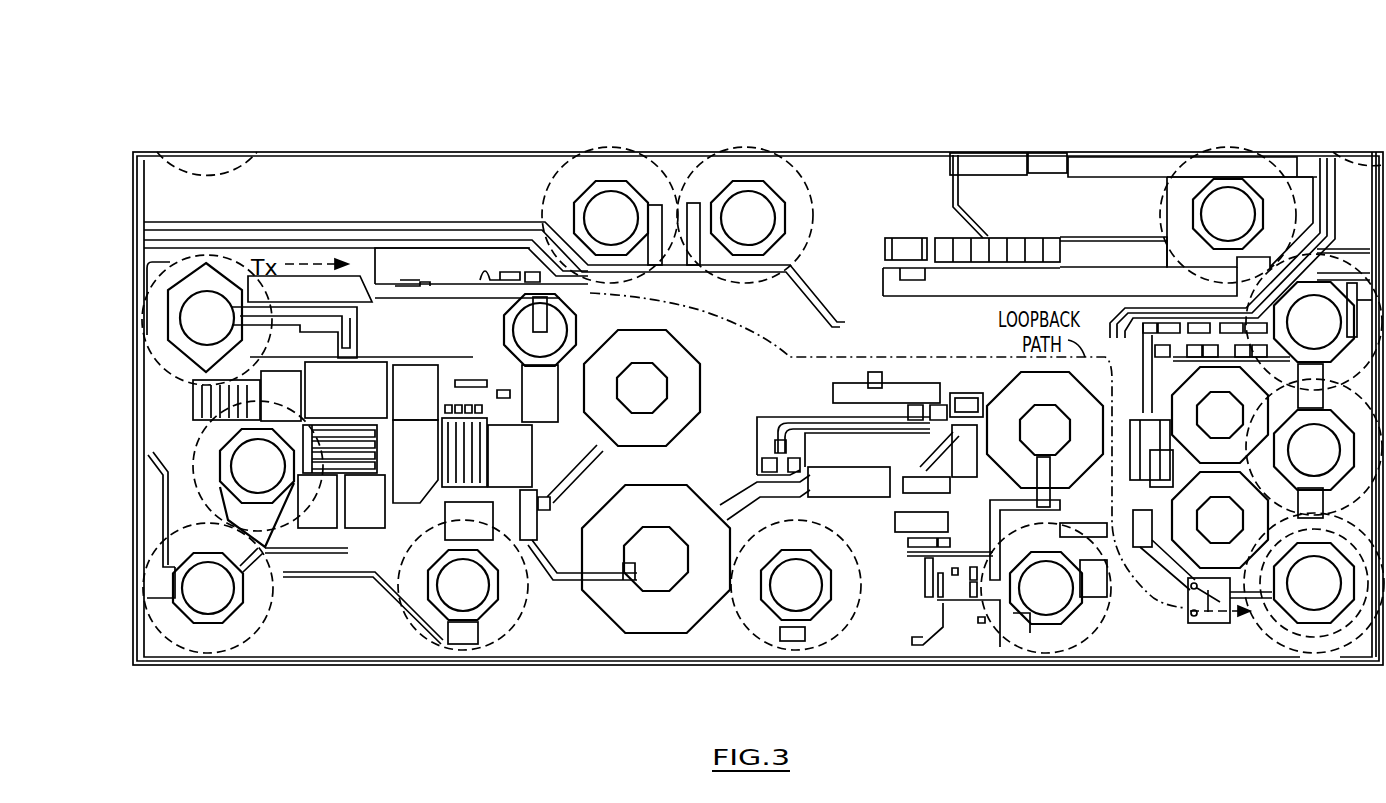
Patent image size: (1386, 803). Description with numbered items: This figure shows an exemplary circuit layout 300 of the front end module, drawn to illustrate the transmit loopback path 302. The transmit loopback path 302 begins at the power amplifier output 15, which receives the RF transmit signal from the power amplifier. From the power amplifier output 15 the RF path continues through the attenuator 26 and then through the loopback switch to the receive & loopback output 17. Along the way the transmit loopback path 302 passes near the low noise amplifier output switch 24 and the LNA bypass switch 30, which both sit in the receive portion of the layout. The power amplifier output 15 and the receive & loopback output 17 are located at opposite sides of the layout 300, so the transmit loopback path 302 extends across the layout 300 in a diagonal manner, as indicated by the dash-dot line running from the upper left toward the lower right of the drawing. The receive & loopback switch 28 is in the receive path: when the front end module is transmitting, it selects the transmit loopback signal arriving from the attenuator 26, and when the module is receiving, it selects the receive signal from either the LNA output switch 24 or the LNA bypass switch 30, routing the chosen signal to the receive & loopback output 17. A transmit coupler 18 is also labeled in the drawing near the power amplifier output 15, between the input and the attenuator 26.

The circuit layout 300 is at (260, 60).
The power amplifier output 15 is at (182, 263).
The transmit coupler 18 is at (237, 268).
The attenuator 26 is at (418, 253).
The transmit loopback path 302 is at (698, 312).
The low noise amplifier output switch 24 is at (958, 390).
The LNA bypass switch 30 is at (828, 418).
The receive & loopback switch 28 is at (1185, 614).
The receive & loopback output 17 is at (1342, 630).